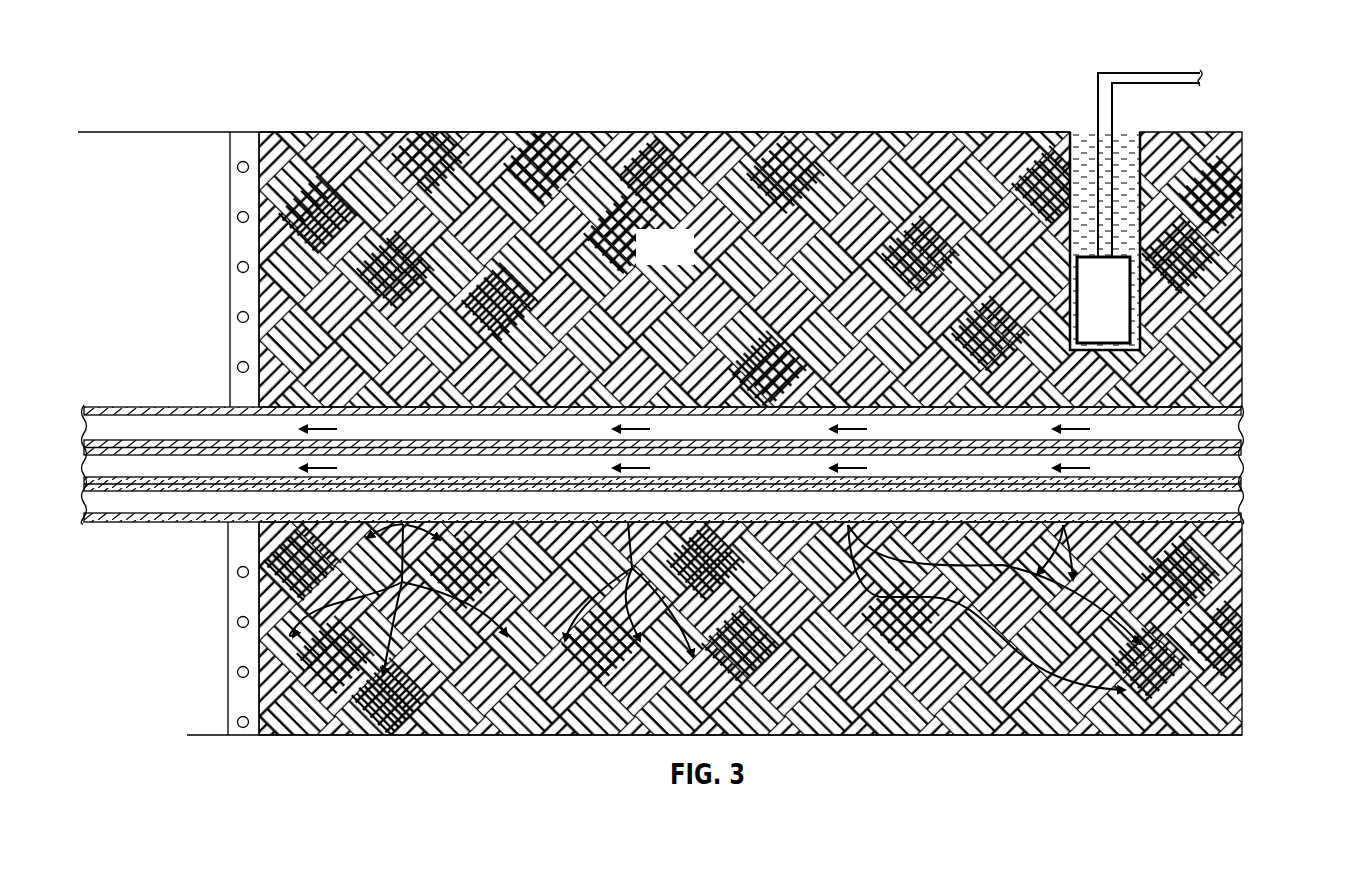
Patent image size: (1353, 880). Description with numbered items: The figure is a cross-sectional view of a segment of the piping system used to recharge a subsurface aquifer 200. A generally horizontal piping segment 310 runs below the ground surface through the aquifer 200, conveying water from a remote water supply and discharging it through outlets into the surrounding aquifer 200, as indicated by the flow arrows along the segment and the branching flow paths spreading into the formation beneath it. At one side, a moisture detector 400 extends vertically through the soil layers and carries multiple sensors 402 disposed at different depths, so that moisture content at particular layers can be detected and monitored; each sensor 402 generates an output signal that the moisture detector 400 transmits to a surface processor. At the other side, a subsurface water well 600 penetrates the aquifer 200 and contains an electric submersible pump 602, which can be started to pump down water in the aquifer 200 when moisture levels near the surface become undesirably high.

The subsurface aquifer 200 is at (686, 260).
The piping segment 310 is at (1228, 508).
The moisture detector 400 is at (244, 94).
The sensor 402 is at (238, 165).
The subsurface water well 600 is at (1142, 272).
The electric submersible pump 602 is at (1137, 333).